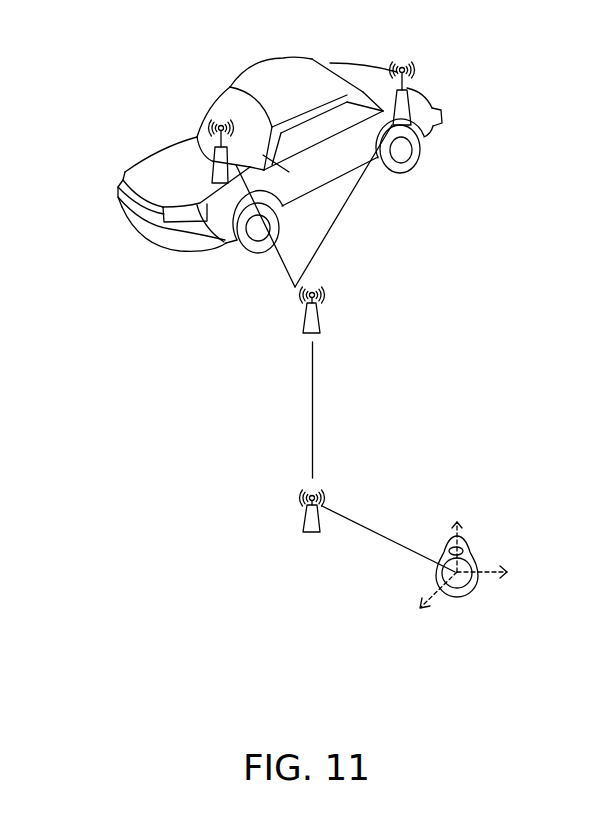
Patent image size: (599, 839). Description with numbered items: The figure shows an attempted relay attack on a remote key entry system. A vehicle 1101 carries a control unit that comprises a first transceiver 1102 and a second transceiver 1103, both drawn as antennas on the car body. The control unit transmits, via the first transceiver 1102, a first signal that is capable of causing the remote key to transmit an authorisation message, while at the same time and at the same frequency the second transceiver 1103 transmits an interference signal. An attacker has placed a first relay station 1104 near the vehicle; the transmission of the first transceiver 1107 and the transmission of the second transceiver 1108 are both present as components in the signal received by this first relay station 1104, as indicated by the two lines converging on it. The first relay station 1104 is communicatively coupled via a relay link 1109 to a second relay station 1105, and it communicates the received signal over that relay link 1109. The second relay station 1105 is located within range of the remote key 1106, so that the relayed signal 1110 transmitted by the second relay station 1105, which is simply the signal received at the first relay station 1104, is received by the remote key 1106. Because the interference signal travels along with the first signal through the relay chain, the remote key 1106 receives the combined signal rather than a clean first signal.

The vehicle 1101 is at (148, 153).
The first transceiver 1102 is at (203, 170).
The second transceiver 1103 is at (412, 107).
The first relay station 1104 is at (332, 317).
The second relay station 1105 is at (293, 513).
The remote key 1106 is at (472, 607).
The transmission of the first transceiver 1107 is at (275, 263).
The transmission of the second transceiver 1108 is at (347, 200).
The relay link 1109 is at (315, 407).
The relayed signal 1110 is at (388, 542).